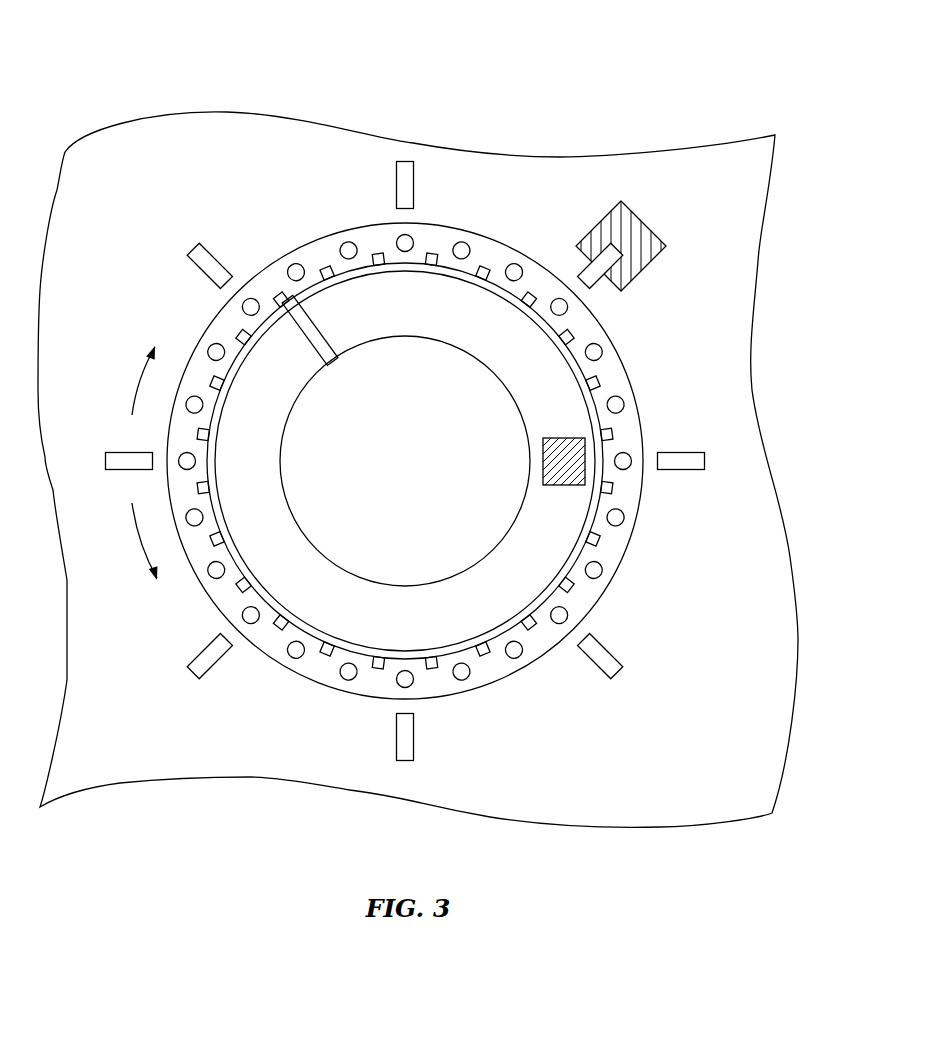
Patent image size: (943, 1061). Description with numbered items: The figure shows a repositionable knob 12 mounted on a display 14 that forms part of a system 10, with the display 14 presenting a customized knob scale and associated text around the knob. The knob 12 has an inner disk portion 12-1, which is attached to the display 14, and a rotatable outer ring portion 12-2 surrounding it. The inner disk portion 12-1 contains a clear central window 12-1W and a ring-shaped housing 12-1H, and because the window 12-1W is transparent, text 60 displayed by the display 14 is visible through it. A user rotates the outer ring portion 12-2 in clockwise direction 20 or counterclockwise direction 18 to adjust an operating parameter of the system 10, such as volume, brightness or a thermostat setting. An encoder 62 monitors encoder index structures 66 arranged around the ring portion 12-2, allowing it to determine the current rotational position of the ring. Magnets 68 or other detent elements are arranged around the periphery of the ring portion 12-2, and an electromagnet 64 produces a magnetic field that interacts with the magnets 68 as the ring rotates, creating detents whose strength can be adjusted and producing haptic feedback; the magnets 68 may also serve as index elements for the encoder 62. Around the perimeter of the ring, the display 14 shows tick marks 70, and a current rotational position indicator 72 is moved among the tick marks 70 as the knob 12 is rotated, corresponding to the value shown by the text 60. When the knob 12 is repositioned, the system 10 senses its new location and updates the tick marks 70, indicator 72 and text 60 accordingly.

The system 10 is at (604, 66).
The knob 12 is at (650, 404).
The inner disk portion 12-1 is at (566, 568).
The rotatable outer ring portion 12-2 is at (618, 538).
The clear central window 12-1W is at (354, 553).
The ring-shaped housing 12-1H is at (492, 606).
The display 14 is at (750, 509).
The counterclockwise direction 18 is at (138, 543).
The clockwise direction 20 is at (138, 386).
The text 60 is at (315, 478).
The encoder 62 is at (565, 437).
The electromagnet 64 is at (308, 330).
The encoder index structures 66 is at (620, 398).
The magnets 68 is at (278, 296).
The tick marks 70 is at (416, 181).
The indicator 72 is at (644, 213).